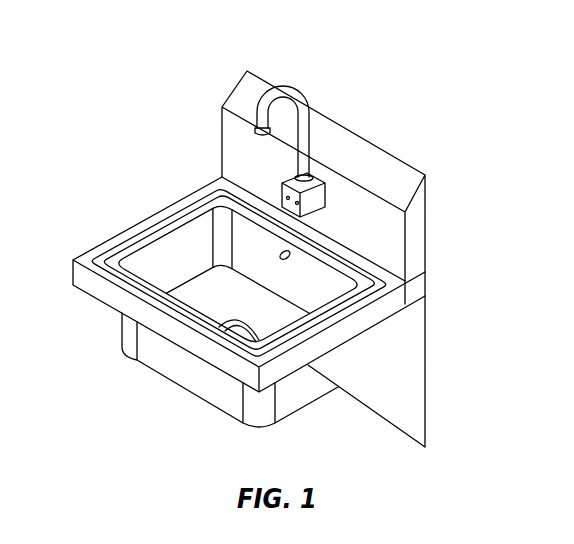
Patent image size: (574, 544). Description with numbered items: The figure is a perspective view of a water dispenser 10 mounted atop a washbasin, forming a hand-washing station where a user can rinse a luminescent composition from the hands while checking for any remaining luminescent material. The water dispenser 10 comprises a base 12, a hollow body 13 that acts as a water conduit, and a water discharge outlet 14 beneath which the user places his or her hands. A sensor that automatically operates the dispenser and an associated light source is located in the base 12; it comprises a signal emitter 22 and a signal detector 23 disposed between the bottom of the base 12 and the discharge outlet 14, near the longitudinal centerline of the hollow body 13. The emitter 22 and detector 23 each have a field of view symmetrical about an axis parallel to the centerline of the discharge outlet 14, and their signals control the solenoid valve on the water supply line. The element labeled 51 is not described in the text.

The water dispenser 10 is at (323, 66).
The base 12 is at (321, 197).
The hollow body 13 is at (311, 122).
The water discharge outlet 14 is at (253, 129).
The signal emitter 22 is at (306, 203).
The signal detector 23 is at (281, 193).
The sink basin 51 is at (128, 235).